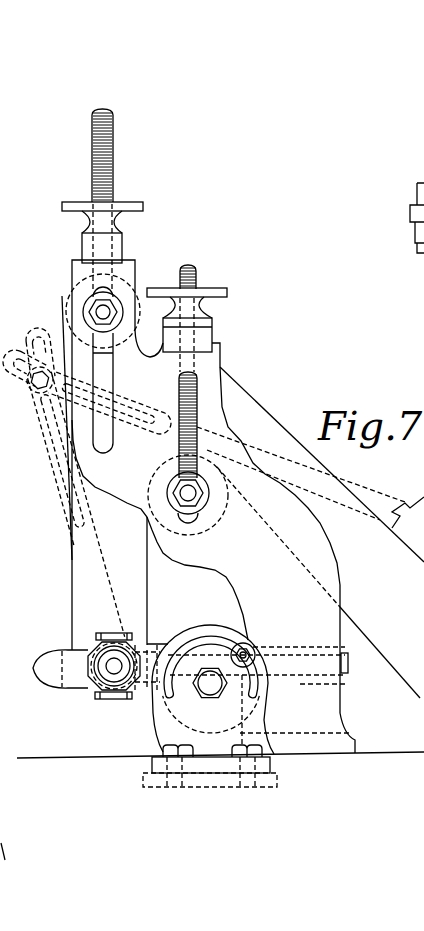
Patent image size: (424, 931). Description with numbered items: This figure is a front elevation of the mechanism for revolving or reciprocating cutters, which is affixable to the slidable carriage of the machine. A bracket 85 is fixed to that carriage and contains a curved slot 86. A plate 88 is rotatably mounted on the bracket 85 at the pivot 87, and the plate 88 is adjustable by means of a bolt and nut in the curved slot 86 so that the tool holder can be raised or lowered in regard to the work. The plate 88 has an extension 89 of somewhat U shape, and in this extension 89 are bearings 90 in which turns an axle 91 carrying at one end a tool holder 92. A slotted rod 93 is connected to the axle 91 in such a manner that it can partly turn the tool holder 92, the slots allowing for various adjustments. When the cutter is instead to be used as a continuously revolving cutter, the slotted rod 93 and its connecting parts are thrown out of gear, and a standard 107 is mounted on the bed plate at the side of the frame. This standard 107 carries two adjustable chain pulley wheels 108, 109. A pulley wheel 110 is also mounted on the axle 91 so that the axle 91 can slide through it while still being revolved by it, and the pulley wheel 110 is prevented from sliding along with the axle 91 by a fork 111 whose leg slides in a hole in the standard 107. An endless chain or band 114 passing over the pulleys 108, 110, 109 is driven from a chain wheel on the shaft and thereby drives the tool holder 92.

The bracket 85 is at (192, 705).
The curved slot 86 is at (252, 666).
The pivot 87 is at (208, 680).
The plate 88 is at (130, 692).
The extension 89 is at (65, 683).
The bearings 90 is at (103, 687).
The axle 91 is at (114, 667).
The tool holder 92 is at (117, 635).
The slotted rod 93 is at (58, 491).
The standard 107 is at (92, 459).
The adjustable chain pulley wheel 108 is at (134, 296).
The adjustable chain pulley wheel 109 is at (228, 475).
The pulley wheel 110 is at (92, 687).
The fork 111 is at (153, 641).
The endless chain 114 is at (73, 564).